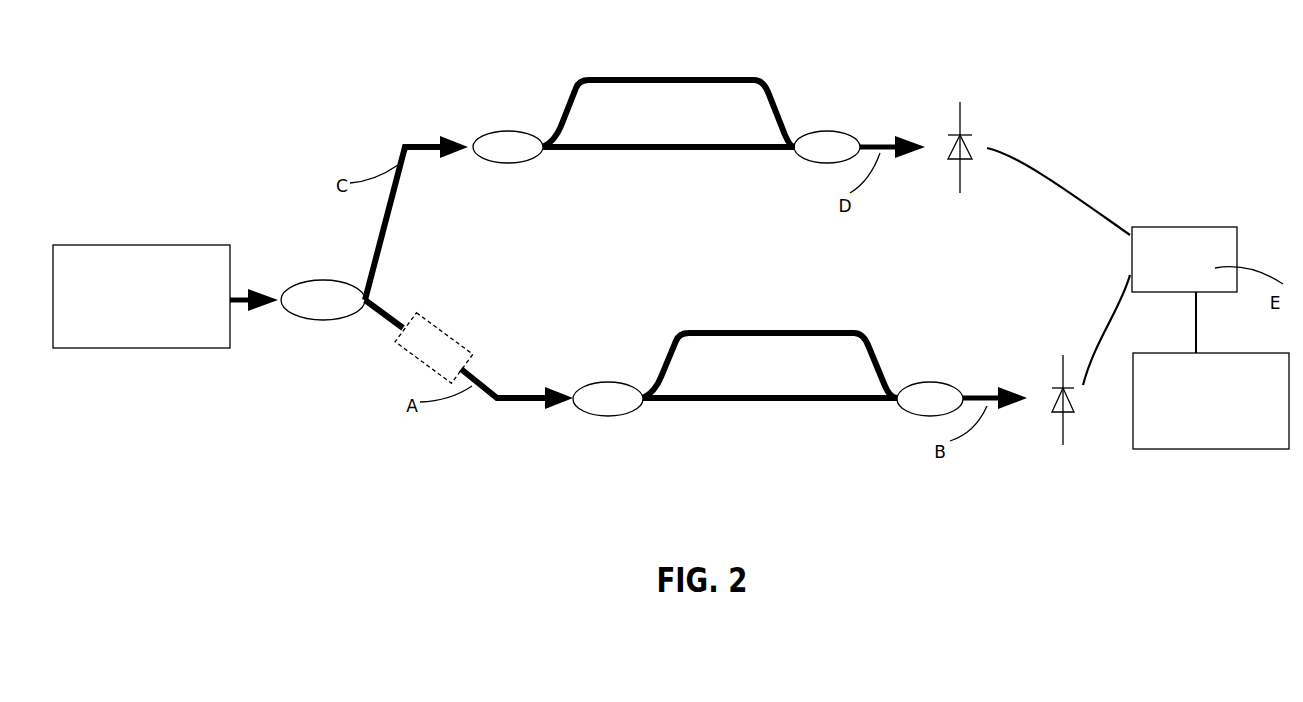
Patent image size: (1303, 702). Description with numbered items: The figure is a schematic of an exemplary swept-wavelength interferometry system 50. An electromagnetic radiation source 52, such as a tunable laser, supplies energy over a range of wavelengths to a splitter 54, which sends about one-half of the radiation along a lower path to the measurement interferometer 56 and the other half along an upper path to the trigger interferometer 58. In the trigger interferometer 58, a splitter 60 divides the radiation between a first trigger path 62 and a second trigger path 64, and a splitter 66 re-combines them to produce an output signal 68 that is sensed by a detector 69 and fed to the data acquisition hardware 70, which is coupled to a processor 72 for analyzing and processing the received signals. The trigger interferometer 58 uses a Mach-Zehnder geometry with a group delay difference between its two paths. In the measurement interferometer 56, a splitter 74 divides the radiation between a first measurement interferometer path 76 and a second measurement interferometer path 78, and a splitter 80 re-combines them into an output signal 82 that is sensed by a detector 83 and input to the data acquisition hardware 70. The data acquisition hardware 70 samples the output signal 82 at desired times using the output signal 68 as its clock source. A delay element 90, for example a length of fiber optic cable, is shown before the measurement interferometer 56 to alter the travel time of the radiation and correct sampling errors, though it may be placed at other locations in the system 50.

The SWI system 50 is at (437, 60).
The electromagnetic radiation source 52 is at (141, 296).
The splitter 54 is at (314, 281).
The measurement interferometer 56 is at (768, 367).
The trigger interferometer 58 is at (666, 113).
The splitter 60 is at (512, 131).
The first trigger path 62 is at (659, 78).
The second trigger path 64 is at (569, 151).
The splitter 66 is at (833, 131).
The output signal 68 is at (906, 137).
The detector 69 is at (965, 128).
The data acquisition hardware 70 is at (1184, 290).
The processor 72 is at (1211, 401).
The splitter 74 is at (614, 383).
The first measurement interferometer path 76 is at (761, 331).
The second measurement interferometer path 78 is at (669, 404).
The splitter 80 is at (938, 383).
The output signal 82 is at (1008, 389).
The detector 83 is at (1063, 445).
The delay element 90 is at (447, 339).